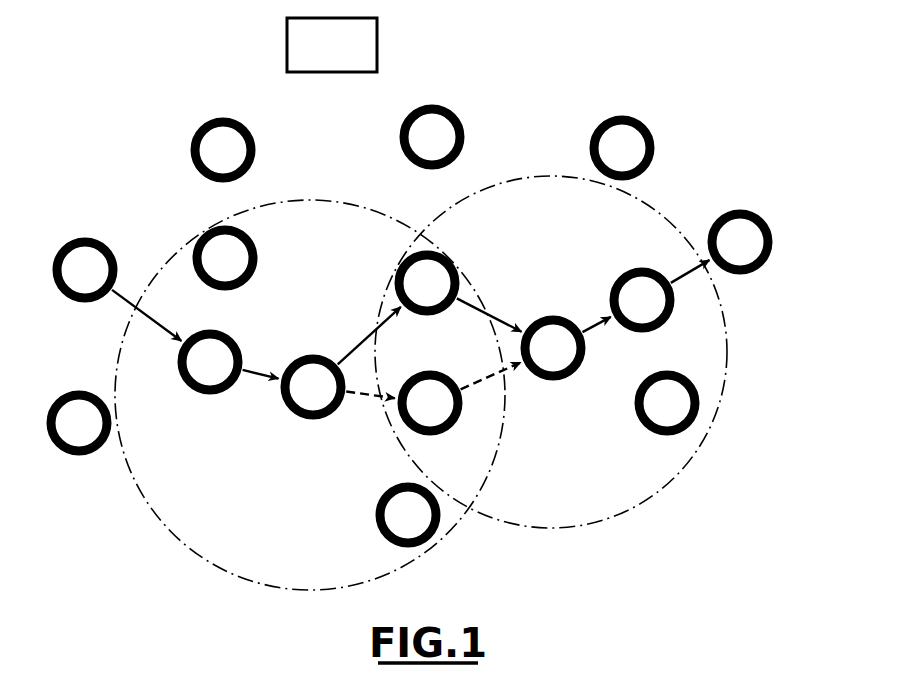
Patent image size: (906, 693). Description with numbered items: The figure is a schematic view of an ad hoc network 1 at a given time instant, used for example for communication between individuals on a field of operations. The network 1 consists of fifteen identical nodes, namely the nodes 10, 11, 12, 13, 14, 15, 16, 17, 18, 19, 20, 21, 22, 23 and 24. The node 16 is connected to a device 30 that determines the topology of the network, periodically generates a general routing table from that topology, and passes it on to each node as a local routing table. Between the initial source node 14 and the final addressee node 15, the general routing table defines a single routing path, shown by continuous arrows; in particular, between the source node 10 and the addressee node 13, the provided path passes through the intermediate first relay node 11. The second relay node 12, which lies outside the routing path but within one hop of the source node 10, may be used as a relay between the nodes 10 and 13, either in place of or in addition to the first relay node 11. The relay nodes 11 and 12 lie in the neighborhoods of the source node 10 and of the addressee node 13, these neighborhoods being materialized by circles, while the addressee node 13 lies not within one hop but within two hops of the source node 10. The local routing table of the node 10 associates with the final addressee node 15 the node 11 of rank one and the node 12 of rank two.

The network 1 is at (128, 182).
The source node 10 is at (313, 387).
The first relay node 11 is at (427, 283).
The second relay node 12 is at (430, 403).
The addressee node 13 is at (553, 348).
The initial source node 14 is at (85, 270).
The final addressee node 15 is at (740, 242).
The node 16 is at (223, 150).
The node 17 is at (432, 137).
The node 18 is at (622, 148).
The node 19 is at (225, 258).
The node 20 is at (210, 362).
The node 21 is at (667, 403).
The node 22 is at (79, 423).
The node 23 is at (642, 300).
The node 24 is at (408, 515).
The device 30 is at (244, 124).